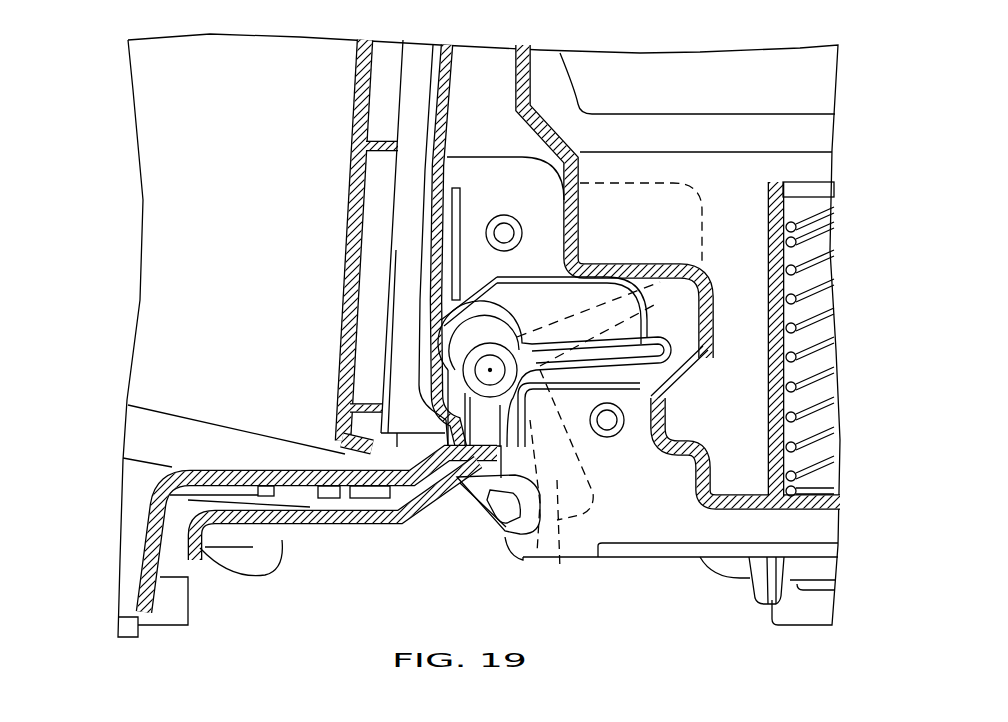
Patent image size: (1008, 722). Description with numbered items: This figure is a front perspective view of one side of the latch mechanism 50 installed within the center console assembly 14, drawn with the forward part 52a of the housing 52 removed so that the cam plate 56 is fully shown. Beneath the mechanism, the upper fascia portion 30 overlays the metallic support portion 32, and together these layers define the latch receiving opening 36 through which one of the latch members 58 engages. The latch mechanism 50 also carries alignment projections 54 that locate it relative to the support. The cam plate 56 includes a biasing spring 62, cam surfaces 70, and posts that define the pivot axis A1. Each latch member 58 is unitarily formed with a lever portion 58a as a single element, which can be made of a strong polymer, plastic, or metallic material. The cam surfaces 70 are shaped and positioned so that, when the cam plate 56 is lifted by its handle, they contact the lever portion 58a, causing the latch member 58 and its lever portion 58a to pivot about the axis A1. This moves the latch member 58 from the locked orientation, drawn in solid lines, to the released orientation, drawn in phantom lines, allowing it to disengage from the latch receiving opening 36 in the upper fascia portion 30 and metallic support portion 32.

The center console assembly 14 is at (100, 178).
The upper fascia portion 30 is at (177, 438).
The metallic support portion 32 is at (252, 522).
The latch receiving opening 36 is at (524, 560).
The latch mechanism 50 is at (392, 95).
The housing 52 is at (392, 243).
The forward part 52a is at (418, 58).
The alignment projections 54 is at (580, 560).
The cam plate 56 is at (735, 185).
The latch members 58 is at (478, 510).
The lever portion 58a is at (655, 288).
The biasing spring 62 is at (808, 357).
The cam surfaces 70 is at (562, 305).
The pivot axis A1 is at (490, 370).